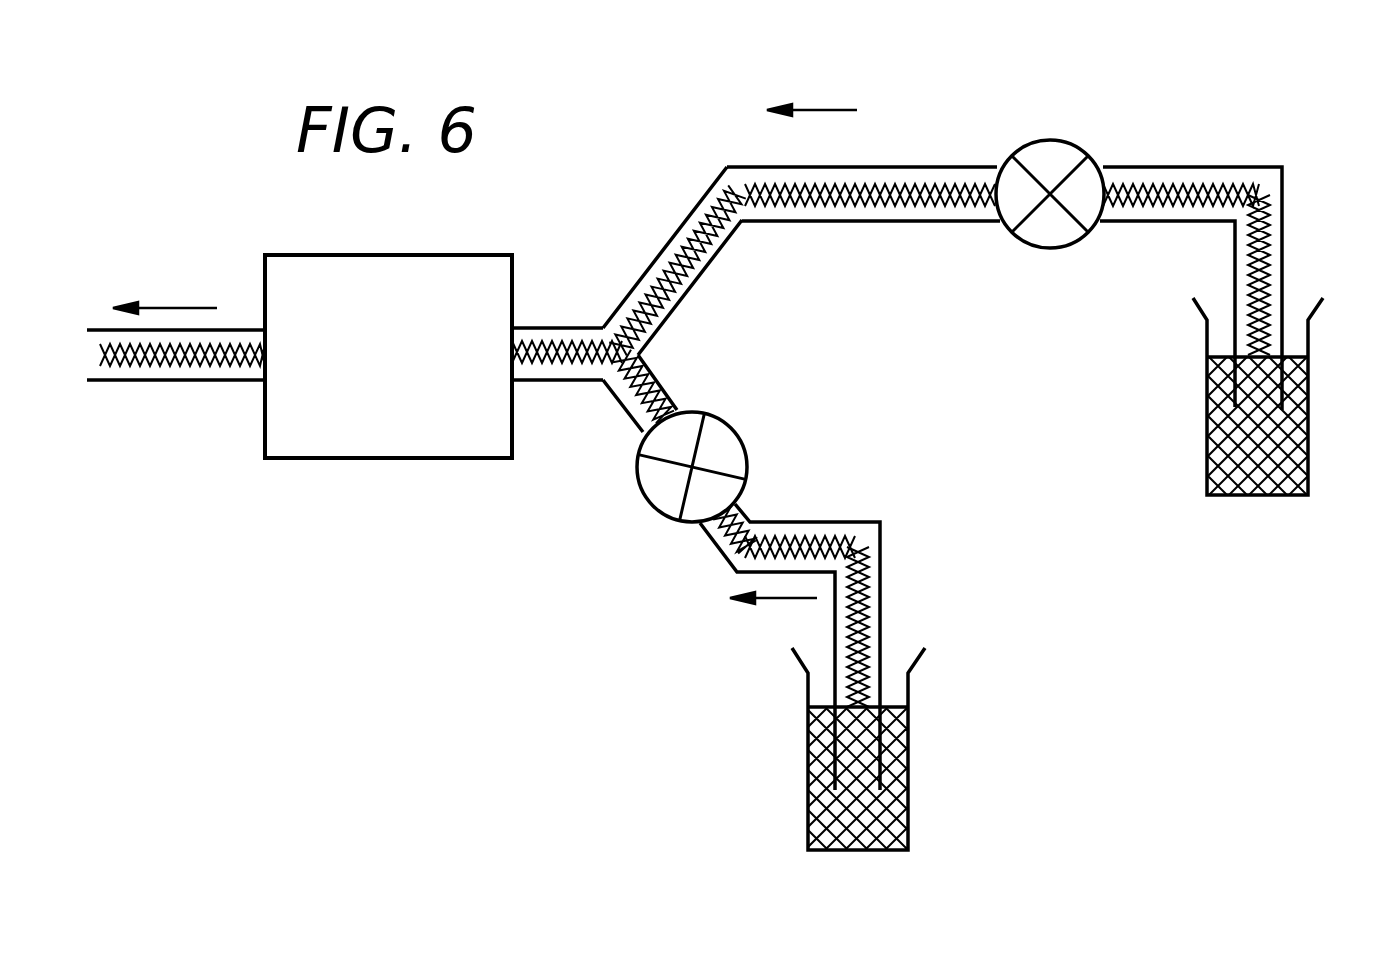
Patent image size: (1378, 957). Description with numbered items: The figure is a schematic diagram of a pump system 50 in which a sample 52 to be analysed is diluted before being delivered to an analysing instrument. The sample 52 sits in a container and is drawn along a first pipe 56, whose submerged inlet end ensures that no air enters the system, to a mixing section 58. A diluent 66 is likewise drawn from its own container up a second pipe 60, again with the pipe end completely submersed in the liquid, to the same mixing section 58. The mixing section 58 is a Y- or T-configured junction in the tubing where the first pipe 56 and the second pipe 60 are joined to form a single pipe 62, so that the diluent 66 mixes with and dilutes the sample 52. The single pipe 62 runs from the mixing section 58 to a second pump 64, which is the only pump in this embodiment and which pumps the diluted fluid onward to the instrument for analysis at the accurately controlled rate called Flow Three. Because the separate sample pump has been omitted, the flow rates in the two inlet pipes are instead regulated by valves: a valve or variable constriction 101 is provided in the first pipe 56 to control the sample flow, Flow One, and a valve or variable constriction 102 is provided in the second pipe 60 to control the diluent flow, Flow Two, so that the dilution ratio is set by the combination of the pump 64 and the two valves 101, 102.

The pump system 50 is at (498, 573).
The sample 52 is at (1308, 410).
The first pipe 56 is at (1160, 167).
The mixing section 58 is at (643, 355).
The second pipe 60 is at (800, 540).
The single pipe 62 is at (552, 383).
The second pump 64 is at (345, 462).
The diluent 66 is at (908, 795).
The valve or variable constriction 101 is at (1058, 142).
The valve or variable constriction 102 is at (744, 440).